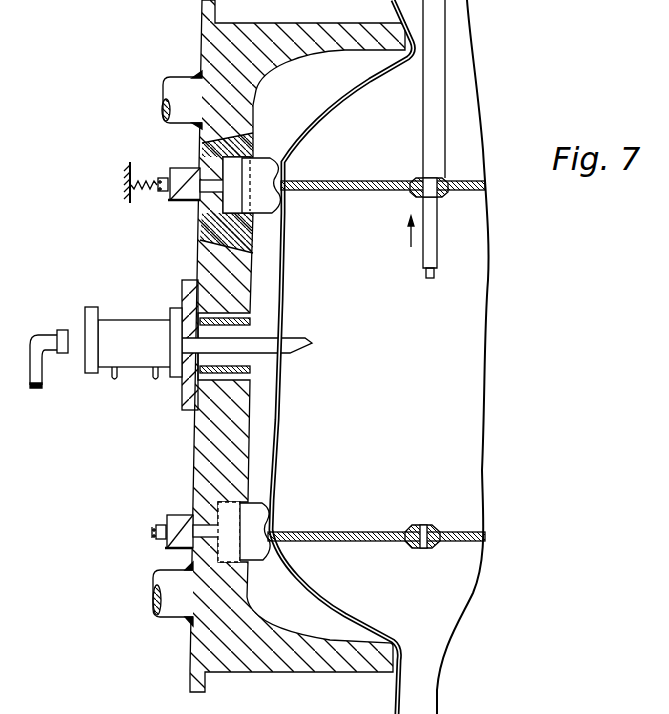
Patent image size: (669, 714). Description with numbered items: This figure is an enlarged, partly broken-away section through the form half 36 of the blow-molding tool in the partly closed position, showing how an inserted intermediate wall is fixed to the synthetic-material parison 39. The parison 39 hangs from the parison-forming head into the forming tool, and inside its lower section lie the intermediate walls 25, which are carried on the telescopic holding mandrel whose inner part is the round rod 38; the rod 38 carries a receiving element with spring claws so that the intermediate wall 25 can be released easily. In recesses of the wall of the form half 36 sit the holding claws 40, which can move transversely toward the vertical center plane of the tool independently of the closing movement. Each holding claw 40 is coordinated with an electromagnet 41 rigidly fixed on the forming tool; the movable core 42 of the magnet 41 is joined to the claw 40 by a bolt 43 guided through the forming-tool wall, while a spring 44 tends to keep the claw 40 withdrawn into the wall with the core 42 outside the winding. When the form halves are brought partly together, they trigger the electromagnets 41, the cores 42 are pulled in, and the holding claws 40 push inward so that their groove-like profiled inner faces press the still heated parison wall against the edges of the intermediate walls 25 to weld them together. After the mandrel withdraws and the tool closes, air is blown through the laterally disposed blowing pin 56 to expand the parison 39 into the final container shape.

The intermediate wall 25 is at (369, 181).
The form half 36 is at (200, 643).
The round rod 38 is at (435, 246).
The parison 39 is at (277, 442).
The holding claw 40 is at (267, 165).
The electromagnet 41 is at (187, 196).
The movable core 42 is at (157, 180).
The bolt 43 is at (200, 168).
The spring 44 is at (128, 189).
The blowing pin 56 is at (130, 327).